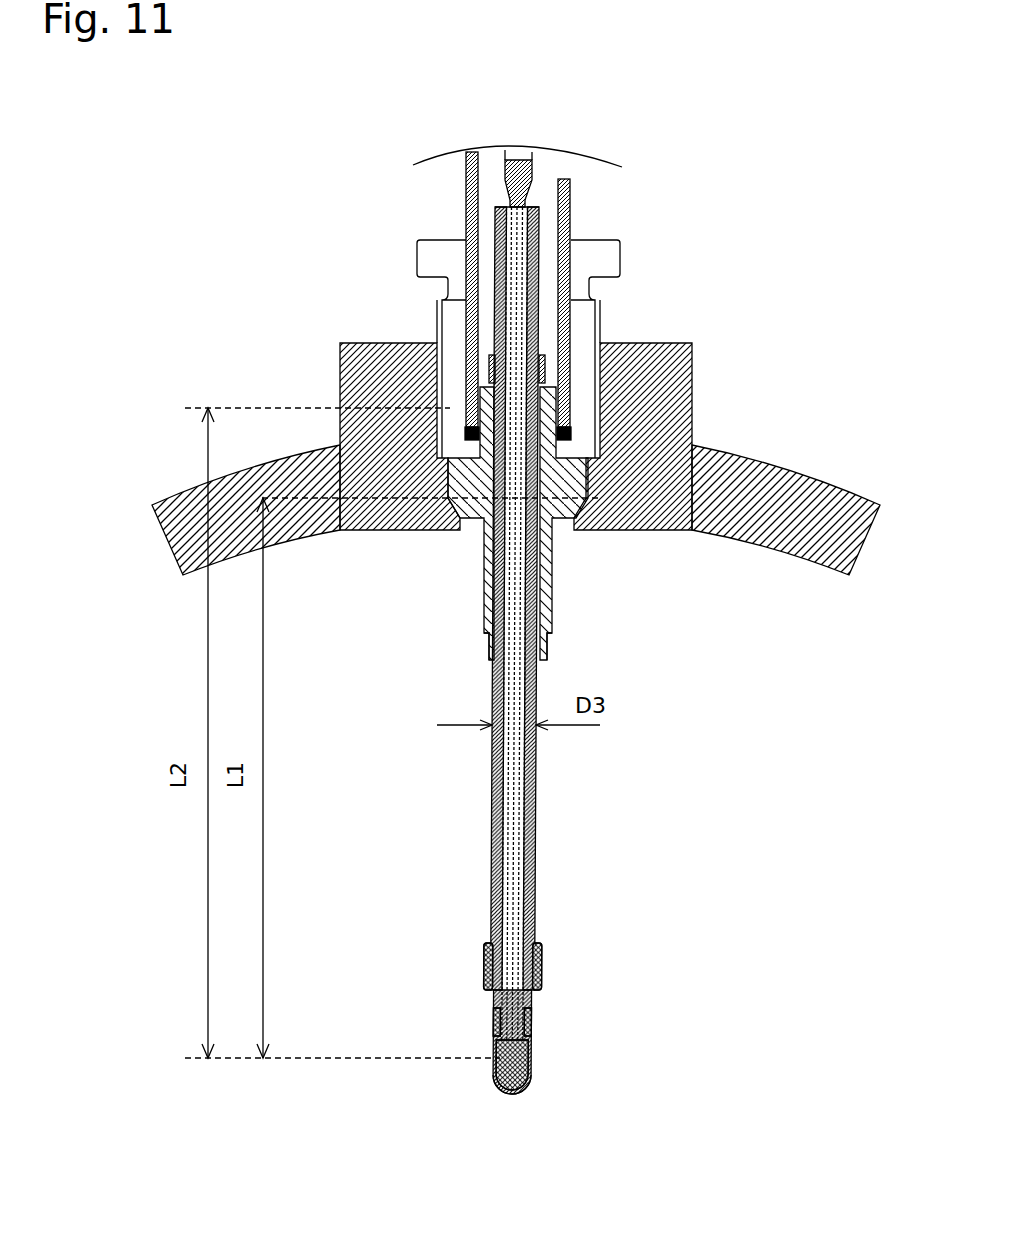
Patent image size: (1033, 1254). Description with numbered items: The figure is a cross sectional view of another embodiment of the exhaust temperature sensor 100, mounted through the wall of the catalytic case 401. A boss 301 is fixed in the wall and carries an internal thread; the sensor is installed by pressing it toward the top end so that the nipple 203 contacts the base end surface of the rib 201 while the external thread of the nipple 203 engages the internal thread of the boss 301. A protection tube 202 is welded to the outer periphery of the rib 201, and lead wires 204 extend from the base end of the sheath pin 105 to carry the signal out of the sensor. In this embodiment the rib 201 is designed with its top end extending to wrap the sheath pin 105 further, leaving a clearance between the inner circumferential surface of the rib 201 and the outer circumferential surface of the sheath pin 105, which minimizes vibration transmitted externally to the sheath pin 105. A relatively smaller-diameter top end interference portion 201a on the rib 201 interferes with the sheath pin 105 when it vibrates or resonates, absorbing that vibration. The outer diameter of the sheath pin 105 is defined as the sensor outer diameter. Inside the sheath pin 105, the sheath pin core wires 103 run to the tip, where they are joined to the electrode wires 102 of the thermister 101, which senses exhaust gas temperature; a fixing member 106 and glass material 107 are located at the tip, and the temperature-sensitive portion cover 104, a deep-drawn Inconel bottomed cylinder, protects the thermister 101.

The exhaust temperature sensor 100 is at (366, 150).
The thermister 101 is at (507, 1055).
The electrode wire 102 is at (500, 1028).
The sheath pin core wire 103 is at (509, 920).
The temperature-sensitive portion cover 104 is at (540, 980).
The sheath pin 105 is at (537, 785).
The fixing member 106 is at (522, 855).
The glass material 107 is at (530, 1073).
The rib 201 is at (560, 520).
The top end interference portion 201a is at (488, 645).
The protection tube 202 is at (569, 322).
The nipple 203 is at (456, 318).
The lead wire 204 is at (527, 202).
The boss 301 is at (683, 402).
The catalytic case 401 is at (825, 487).